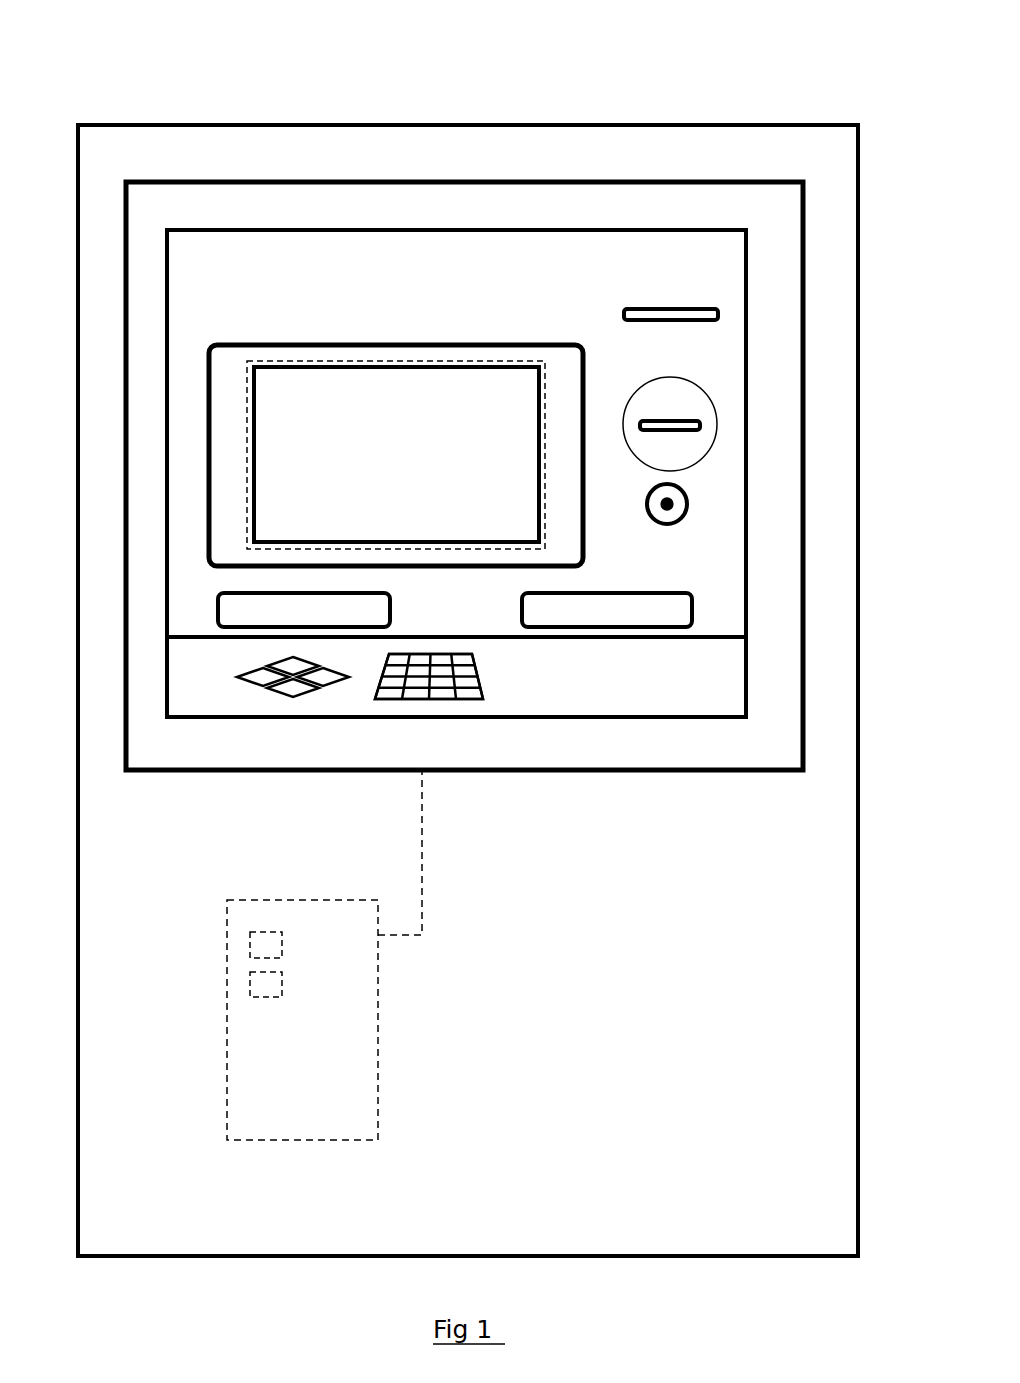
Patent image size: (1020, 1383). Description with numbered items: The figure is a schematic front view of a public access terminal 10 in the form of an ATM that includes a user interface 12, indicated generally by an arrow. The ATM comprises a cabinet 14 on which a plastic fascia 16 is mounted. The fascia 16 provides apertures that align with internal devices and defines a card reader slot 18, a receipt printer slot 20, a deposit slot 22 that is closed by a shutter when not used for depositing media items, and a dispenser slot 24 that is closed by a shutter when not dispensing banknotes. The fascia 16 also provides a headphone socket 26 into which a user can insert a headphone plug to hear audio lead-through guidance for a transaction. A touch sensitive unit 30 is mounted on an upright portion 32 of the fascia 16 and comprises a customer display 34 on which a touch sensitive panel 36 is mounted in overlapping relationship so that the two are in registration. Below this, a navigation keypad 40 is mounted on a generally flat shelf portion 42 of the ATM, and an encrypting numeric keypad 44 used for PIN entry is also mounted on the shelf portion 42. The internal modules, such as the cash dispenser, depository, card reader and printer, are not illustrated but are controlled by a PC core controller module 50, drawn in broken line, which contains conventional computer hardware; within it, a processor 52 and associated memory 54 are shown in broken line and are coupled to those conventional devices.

The public access terminal 10 is at (757, 82).
The user interface 12 is at (169, 822).
The cabinet 14 is at (860, 1220).
The fascia 16 is at (310, 217).
The card reader slot 18 is at (690, 420).
The receipt printer slot 20 is at (705, 308).
The deposit slot 22 is at (390, 603).
The dispenser slot 24 is at (605, 627).
The headphone socket 26 is at (672, 500).
The touch sensitive unit 30 is at (236, 494).
The upright portion 32 is at (240, 315).
The customer display 34 is at (257, 430).
The touch sensitive panel 36 is at (330, 360).
The navigation keypad 40 is at (314, 700).
The shelf portion 42 is at (505, 678).
The encrypting numeric keypad 44 is at (437, 683).
The PC core controller module 50 is at (378, 1003).
The processor 52 is at (250, 945).
The memory 54 is at (250, 993).